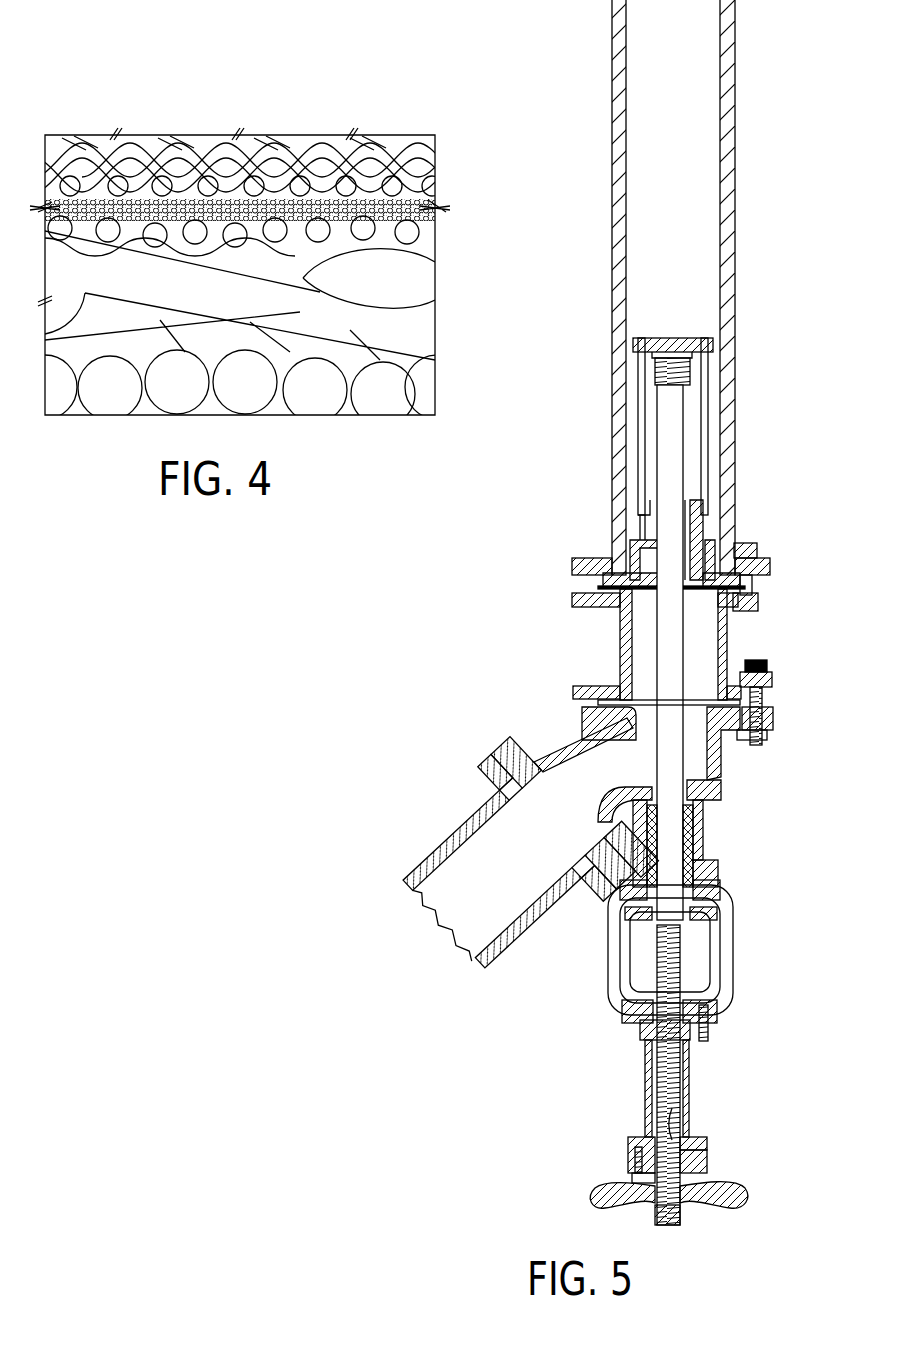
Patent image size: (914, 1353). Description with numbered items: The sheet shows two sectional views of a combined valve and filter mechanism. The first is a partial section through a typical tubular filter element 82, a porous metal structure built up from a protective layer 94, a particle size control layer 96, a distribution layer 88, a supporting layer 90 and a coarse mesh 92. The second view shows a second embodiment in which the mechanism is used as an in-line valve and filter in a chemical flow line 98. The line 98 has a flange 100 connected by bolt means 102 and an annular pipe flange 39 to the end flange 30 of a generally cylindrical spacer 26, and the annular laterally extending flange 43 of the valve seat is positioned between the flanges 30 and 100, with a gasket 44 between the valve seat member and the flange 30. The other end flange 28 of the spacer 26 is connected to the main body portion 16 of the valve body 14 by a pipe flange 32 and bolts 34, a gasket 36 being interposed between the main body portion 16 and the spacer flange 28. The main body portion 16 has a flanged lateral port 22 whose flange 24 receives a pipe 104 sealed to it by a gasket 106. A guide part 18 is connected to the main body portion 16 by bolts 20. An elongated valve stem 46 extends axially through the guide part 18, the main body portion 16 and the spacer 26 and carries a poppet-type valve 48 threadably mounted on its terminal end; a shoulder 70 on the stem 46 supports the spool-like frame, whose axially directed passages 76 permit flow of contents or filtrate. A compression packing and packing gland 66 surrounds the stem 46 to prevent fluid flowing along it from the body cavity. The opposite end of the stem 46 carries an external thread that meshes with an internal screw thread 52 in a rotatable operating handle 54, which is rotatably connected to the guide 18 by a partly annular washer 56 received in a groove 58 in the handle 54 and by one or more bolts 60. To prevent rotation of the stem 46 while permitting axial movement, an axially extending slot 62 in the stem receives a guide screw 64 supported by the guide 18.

In FIG. 4, the protective layer 94 is at (413, 183).
In FIG. 4, the particle size control layer 96 is at (440, 207).
In FIG. 4, the distribution layer 88 is at (410, 237).
In FIG. 4, the supporting layer 90 is at (405, 313).
In FIG. 4, the coarse mesh 92 is at (400, 396).
In FIG. 5, the chemical flow line 98 is at (735, 240).
In FIG. 5, the flange 100 is at (584, 557).
In FIG. 5, the bolt means 102 is at (758, 604).
In FIG. 5, the annular laterally extending flange 43 is at (600, 578).
In FIG. 5, the gasket 44 is at (600, 588).
In FIG. 5, the annular pipe flange 39 is at (576, 601).
In FIG. 5, the filter element 82 is at (708, 362).
In FIG. 5, the poppet-type valve 48 is at (700, 340).
In FIG. 5, the axially directed passages 76 is at (646, 566).
In FIG. 5, the shoulder 70 is at (685, 583).
In FIG. 5, the valve stem 46 is at (684, 410).
In FIG. 5, the end flange 30 is at (619, 612).
In FIG. 5, the end flange 28 is at (610, 690).
In FIG. 5, the spacer 26 is at (722, 632).
In FIG. 5, the gasket 36 is at (694, 700).
In FIG. 5, the pipe flange 32 is at (770, 688).
In FIG. 5, the bolts 34 is at (755, 742).
In FIG. 5, the main body portion 16 is at (716, 774).
In FIG. 5, the pipe 104 is at (503, 948).
In FIG. 5, the gasket 106 is at (497, 765).
In FIG. 5, the flange 24 is at (516, 760).
In FIG. 5, the flanged lateral port 22 is at (600, 812).
In FIG. 5, the valve body 14 is at (724, 813).
In FIG. 5, the compression packing and packing gland 66 is at (704, 850).
In FIG. 5, the bolts 20 is at (700, 1038).
In FIG. 5, the guide part 18 is at (689, 1072).
In FIG. 5, the axially extending slot 62 is at (676, 1126).
In FIG. 5, the internal screw thread 52 is at (682, 1195).
In FIG. 5, the guide screw 64 is at (708, 1143).
In FIG. 5, the partly annular washer 56 is at (630, 1160).
In FIG. 5, the bolts 60 is at (645, 1177).
In FIG. 5, the rotatable operating handle 54 is at (736, 1211).
In FIG. 5, the groove 58 is at (645, 1185).